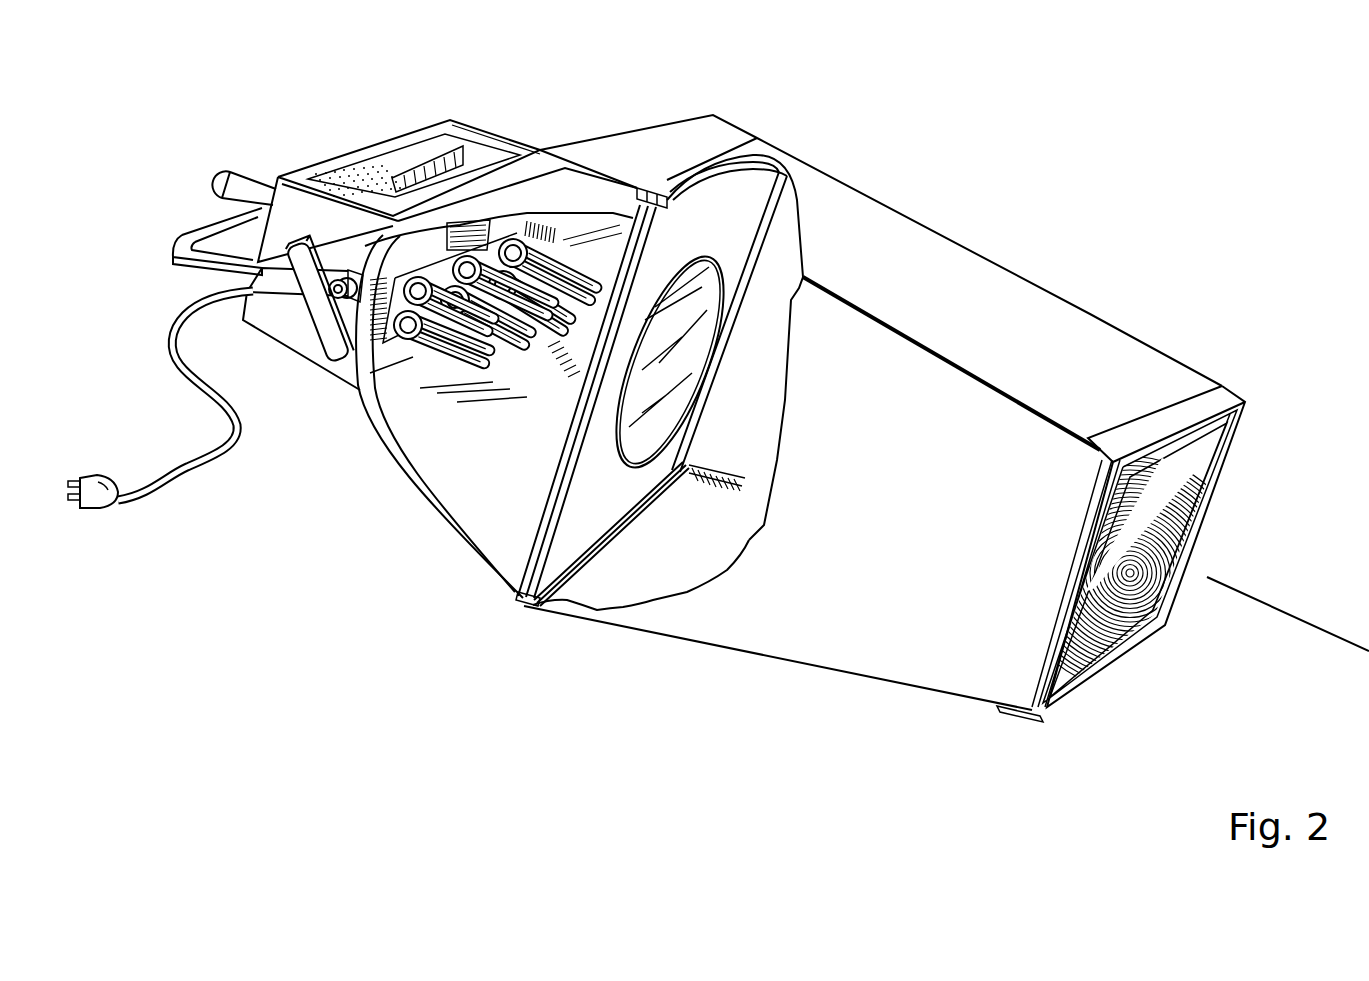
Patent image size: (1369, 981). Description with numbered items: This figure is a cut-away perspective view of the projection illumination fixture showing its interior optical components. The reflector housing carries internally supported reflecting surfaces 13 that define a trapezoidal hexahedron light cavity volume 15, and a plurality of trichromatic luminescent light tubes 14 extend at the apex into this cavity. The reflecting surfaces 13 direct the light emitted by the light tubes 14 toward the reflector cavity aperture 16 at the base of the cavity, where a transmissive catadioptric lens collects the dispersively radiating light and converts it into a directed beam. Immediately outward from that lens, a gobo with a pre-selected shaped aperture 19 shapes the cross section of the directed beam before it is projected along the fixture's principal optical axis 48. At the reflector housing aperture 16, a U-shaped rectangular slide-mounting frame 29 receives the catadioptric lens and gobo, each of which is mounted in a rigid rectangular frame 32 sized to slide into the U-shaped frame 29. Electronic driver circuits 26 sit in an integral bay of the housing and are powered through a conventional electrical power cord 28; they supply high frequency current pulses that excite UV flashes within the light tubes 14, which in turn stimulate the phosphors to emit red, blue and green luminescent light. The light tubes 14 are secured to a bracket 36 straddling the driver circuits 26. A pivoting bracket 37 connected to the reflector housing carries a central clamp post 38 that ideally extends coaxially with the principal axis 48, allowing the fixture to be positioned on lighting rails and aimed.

The reflecting surfaces 13 is at (448, 540).
The trichromatic luminescent light tubes 14 is at (467, 480).
The trapezoidal hexahedron light cavity volume 15 is at (519, 432).
The reflector cavity aperture 16 is at (595, 192).
The shaped aperture 19 is at (692, 385).
The electronic driver circuits 26 is at (428, 162).
The electrical power cord 28 is at (105, 508).
The U-shaped rectangular slide-mounting frame 29 is at (660, 198).
The rigid rectangular frame 32 is at (1040, 720).
The bracket 36 is at (425, 362).
The pivoting bracket 37 is at (172, 238).
The central clamp post 38 is at (225, 183).
The principal optical axis 48 is at (1320, 623).